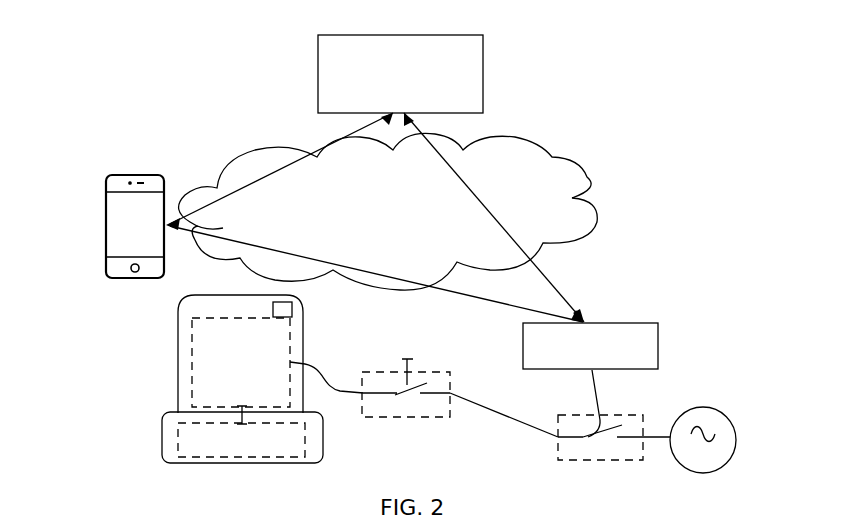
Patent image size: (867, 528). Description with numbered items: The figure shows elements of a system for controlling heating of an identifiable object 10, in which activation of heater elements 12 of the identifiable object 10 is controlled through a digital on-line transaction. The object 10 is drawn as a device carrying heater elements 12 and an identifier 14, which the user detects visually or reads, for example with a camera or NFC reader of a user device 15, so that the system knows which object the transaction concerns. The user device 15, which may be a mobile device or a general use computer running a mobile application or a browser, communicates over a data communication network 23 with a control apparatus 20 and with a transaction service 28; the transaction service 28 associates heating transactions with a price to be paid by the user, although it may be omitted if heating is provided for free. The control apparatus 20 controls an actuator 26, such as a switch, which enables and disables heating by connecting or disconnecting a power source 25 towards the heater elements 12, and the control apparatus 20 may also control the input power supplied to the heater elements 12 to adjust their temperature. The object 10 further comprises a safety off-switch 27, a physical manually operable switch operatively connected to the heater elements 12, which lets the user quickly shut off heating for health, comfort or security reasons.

The identifiable object 10 is at (226, 389).
The heater elements 12 is at (200, 382).
The identifier 14 is at (292, 305).
The user device 15 is at (112, 210).
The control apparatus 20 is at (643, 338).
The data communication network 23 is at (563, 178).
The power source 25 is at (707, 423).
The actuator 26 is at (575, 447).
The safety off-switch 27 is at (397, 405).
The transaction service 28 is at (467, 75).